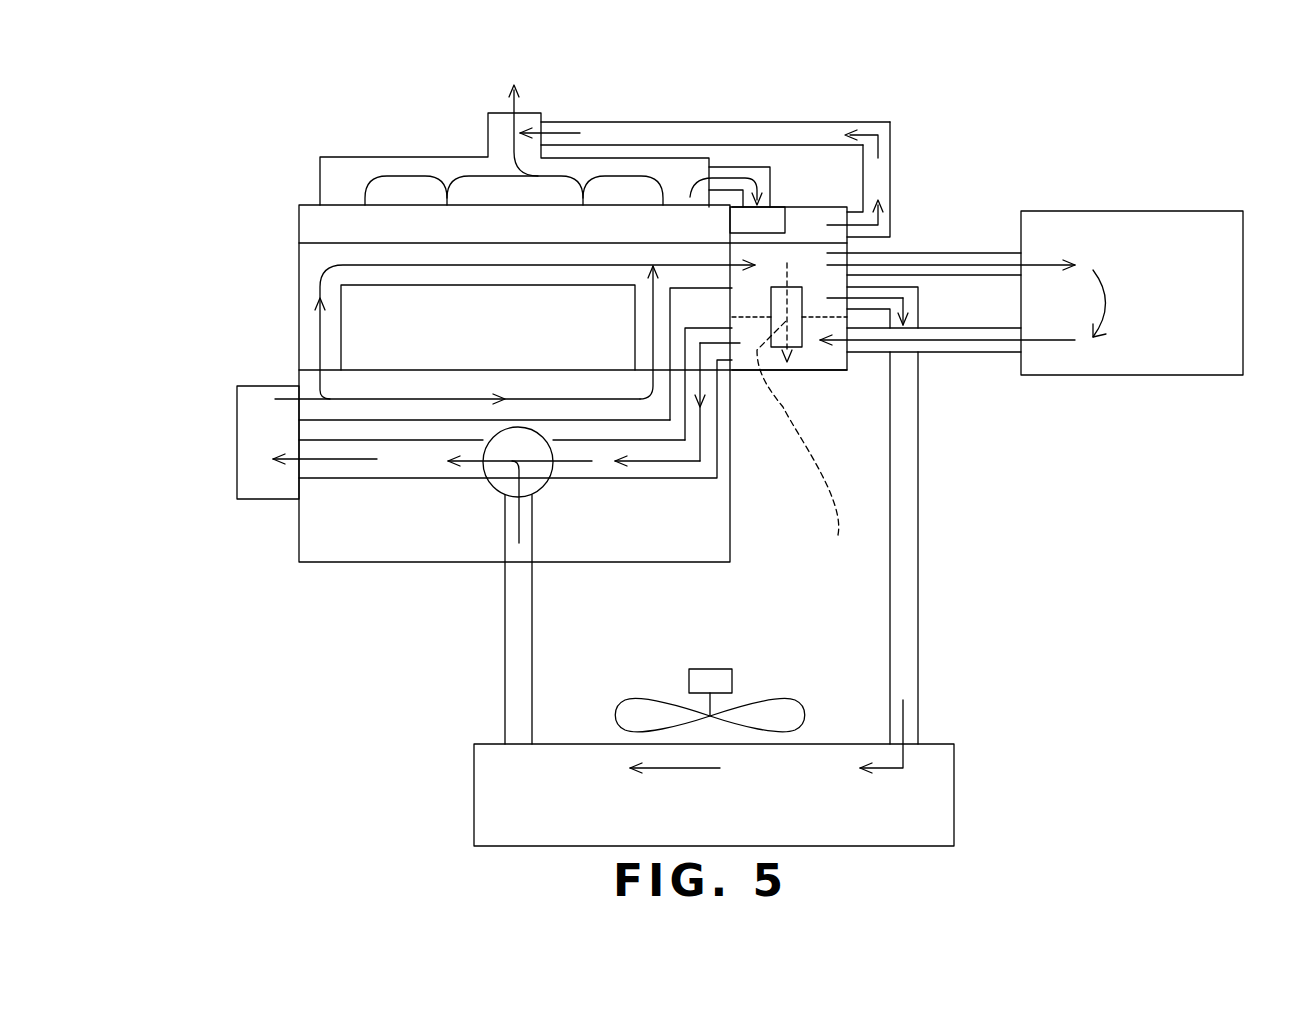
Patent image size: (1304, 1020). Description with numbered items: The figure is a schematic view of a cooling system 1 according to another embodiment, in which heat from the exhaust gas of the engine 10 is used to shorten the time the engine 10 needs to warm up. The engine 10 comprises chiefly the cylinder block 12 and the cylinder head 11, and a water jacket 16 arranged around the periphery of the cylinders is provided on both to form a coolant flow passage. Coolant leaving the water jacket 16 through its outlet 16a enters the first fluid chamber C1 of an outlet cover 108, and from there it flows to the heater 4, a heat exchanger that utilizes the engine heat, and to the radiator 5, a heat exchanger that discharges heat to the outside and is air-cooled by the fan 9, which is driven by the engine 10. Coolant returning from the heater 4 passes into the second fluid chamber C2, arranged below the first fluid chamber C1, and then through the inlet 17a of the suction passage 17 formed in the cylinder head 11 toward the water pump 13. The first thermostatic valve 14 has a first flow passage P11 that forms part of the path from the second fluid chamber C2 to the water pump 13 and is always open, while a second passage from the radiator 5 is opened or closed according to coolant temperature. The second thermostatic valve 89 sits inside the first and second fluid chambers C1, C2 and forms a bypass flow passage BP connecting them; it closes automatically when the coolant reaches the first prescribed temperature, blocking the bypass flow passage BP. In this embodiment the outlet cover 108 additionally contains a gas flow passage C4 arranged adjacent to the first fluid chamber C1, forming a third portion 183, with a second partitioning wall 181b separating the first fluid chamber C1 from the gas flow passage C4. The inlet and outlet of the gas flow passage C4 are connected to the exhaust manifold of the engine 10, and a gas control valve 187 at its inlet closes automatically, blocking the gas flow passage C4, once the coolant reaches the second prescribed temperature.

The cooling system 1 is at (1062, 522).
The heater 4 is at (1229, 196).
The radiator 5 is at (972, 776).
The fan 9 is at (748, 680).
The engine 10 is at (288, 198).
The cylinder head 11 is at (538, 349).
The cylinder block 12 is at (368, 549).
The water pump 13 is at (247, 417).
The first thermostatic valve 14 is at (497, 480).
The water jacket 16 is at (312, 258).
The outlet of the water jacket 16a is at (724, 255).
The suction passage 17 is at (713, 467).
The inlet of the suction passage 17a is at (720, 358).
The second thermostatic valve 89 is at (812, 356).
The outlet cover 108 is at (811, 192).
The second partitioning wall 181b is at (807, 245).
The third portion 183 is at (838, 193).
The gas control valve 187 is at (762, 222).
The first fluid chamber C1 is at (850, 252).
The second fluid chamber C2 is at (828, 358).
The gas flow passage C4 is at (793, 223).
The bypass flow passage BP is at (808, 447).
The first flow passage P11 is at (577, 461).